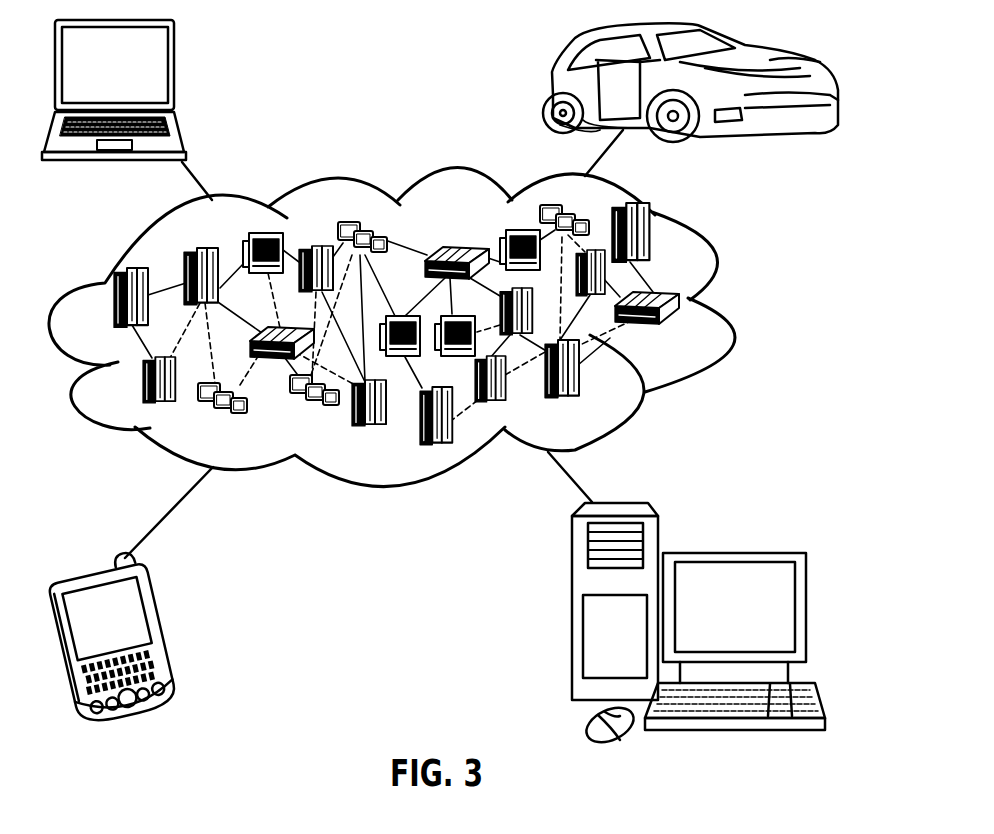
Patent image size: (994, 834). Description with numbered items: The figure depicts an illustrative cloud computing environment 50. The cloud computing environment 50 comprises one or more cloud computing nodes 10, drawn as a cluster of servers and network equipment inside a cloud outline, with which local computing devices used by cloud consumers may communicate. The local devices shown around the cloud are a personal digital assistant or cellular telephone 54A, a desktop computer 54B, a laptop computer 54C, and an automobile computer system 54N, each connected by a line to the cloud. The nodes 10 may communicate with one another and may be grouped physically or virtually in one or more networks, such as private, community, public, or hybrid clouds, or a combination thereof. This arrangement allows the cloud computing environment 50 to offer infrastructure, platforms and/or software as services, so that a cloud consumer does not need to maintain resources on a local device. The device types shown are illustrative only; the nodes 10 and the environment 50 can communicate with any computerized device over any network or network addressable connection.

The cloud computing node 10 is at (690, 333).
The cloud computing environment 50 is at (730, 305).
The personal digital assistant or cellular telephone 54A is at (165, 632).
The desktop computer 54B is at (733, 556).
The laptop computer 54C is at (175, 70).
The automobile computer system 54N is at (548, 88).